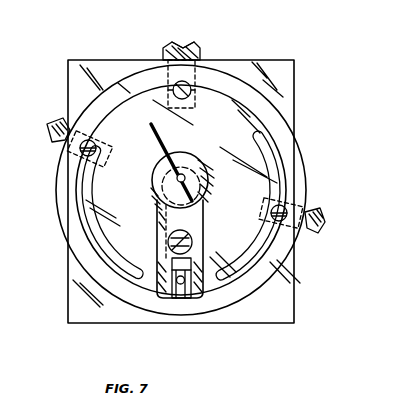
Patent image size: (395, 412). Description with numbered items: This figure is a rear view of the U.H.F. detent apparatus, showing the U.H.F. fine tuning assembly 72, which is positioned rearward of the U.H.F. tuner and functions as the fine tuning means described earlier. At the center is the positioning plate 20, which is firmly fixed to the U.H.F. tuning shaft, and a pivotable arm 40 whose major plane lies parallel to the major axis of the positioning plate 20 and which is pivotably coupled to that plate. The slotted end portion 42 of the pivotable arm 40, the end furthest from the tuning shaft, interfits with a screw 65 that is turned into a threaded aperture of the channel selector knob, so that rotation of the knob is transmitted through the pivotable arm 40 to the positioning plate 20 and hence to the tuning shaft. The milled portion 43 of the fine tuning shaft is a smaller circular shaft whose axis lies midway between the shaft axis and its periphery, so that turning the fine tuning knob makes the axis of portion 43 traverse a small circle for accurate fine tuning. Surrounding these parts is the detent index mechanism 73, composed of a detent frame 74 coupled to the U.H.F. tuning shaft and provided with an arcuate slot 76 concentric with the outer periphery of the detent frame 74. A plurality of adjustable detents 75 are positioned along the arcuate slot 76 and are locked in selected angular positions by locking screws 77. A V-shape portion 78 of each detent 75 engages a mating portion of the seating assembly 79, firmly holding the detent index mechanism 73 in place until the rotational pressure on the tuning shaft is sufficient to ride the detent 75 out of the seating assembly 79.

The positioning plate 20 is at (158, 183).
The pivotable arm 40 is at (201, 250).
The slotted end portion 42 is at (169, 244).
The milled portion of shaft 43 is at (184, 178).
The screw 65 is at (181, 286).
The U.H.F. fine tuning assembly 72 is at (128, 222).
The detent index mechanism 73 is at (213, 53).
The detent frame 74 is at (68, 197).
The adjustable detents 75 is at (47, 128).
The arcuate slot 76 is at (283, 152).
The locking screws 77 is at (190, 98).
The V-shape portion 78 is at (187, 48).
The seating assembly 79 is at (177, 46).